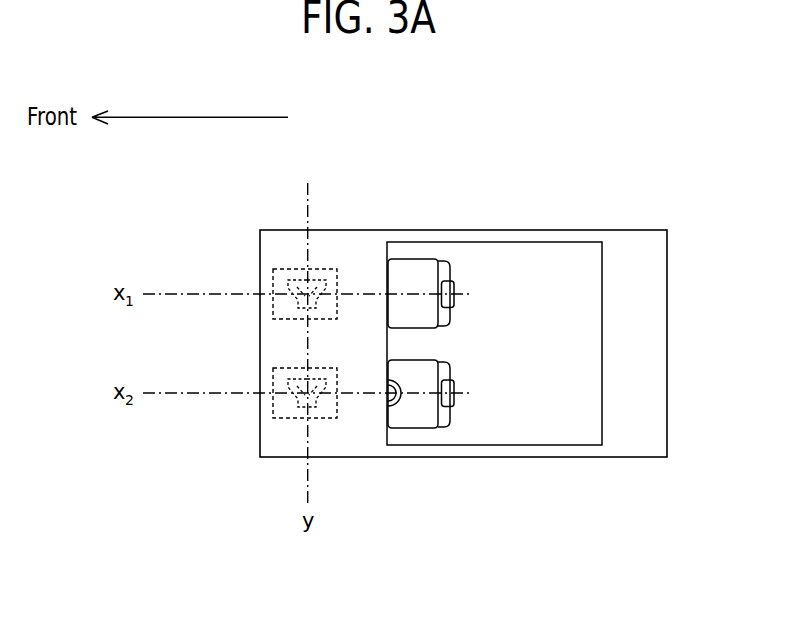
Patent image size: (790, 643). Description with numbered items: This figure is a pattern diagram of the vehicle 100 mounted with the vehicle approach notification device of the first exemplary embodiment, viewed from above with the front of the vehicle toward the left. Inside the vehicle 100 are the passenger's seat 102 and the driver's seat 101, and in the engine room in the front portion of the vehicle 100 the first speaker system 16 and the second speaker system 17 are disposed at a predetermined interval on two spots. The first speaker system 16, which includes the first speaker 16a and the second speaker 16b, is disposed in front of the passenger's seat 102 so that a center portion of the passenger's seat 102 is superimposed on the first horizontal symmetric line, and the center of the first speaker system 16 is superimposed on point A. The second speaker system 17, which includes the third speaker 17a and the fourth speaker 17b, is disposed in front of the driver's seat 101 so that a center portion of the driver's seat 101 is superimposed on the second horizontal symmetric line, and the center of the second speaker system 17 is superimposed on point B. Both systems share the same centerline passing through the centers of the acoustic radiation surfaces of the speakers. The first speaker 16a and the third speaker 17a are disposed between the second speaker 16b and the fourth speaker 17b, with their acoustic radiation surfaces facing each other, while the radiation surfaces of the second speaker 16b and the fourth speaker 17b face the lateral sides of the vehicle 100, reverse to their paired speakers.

The vehicle 100 is at (467, 230).
The driver's seat 101 is at (418, 420).
The passenger's seat 102 is at (412, 270).
The first speaker system 16 is at (273, 280).
The first speaker 16a is at (320, 298).
The second speaker 16b is at (297, 280).
The second speaker system 17 is at (295, 418).
The third speaker 17a is at (292, 382).
The fourth speaker 17b is at (313, 408).
The point A is at (305, 295).
The point B is at (300, 396).